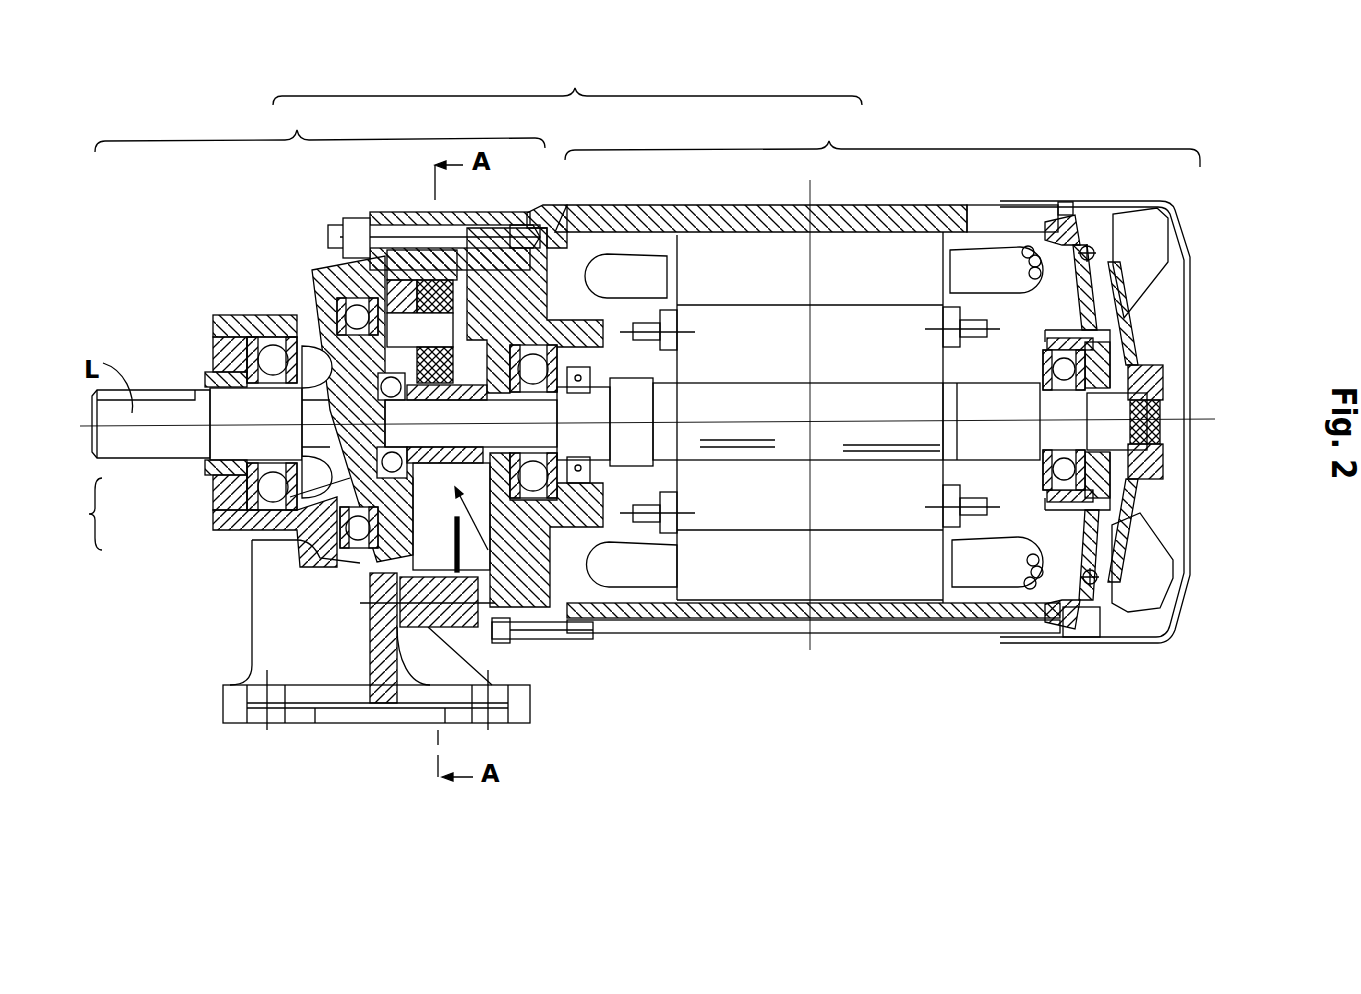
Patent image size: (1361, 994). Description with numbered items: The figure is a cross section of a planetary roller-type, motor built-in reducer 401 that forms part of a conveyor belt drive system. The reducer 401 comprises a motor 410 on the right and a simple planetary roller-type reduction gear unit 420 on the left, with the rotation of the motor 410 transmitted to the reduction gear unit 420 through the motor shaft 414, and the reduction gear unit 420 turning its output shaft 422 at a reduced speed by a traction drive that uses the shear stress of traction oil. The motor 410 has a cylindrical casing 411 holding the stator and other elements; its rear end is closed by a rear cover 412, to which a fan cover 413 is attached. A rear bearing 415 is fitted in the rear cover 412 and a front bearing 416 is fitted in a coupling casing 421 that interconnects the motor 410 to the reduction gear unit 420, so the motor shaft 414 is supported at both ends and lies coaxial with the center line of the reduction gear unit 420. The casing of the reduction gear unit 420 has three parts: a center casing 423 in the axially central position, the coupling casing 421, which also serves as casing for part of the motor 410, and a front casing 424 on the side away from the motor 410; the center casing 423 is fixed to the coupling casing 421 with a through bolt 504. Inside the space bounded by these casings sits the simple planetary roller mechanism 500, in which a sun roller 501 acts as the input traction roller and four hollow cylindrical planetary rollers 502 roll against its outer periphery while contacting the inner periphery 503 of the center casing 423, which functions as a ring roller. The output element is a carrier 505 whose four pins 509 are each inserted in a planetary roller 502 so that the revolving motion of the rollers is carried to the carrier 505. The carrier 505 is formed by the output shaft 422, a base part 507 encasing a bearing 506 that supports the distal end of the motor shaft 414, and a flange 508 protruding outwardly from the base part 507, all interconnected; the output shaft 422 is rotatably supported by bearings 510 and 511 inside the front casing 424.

The planetary roller-type, motor built-in reducer 401 is at (567, 86).
The motor 410 is at (882, 139).
The reduction gear unit 420 is at (320, 125).
The cylindrical casing 411 is at (852, 215).
The rear cover 412 is at (1067, 205).
The fan cover 413 is at (1187, 260).
The motor shaft 414 is at (833, 443).
The rear bearing 415 is at (1085, 353).
The front bearing 416 is at (625, 257).
The coupling casing 421 is at (548, 213).
The output shaft 422 is at (167, 450).
The center casing 423 is at (443, 218).
The front casing 424 is at (385, 222).
The simple planetary roller mechanism 500 is at (493, 627).
The sun roller 501 is at (463, 388).
The planetary rollers 502 is at (402, 290).
The inner periphery 503 is at (380, 562).
The through bolt 504 is at (352, 238).
The carrier 505 is at (73, 514).
The bearing 506 is at (343, 330).
The base part 507 is at (290, 532).
The flange 508 is at (335, 553).
The pins 509 is at (375, 292).
The bearing 510 is at (352, 310).
The bearing 511 is at (224, 345).